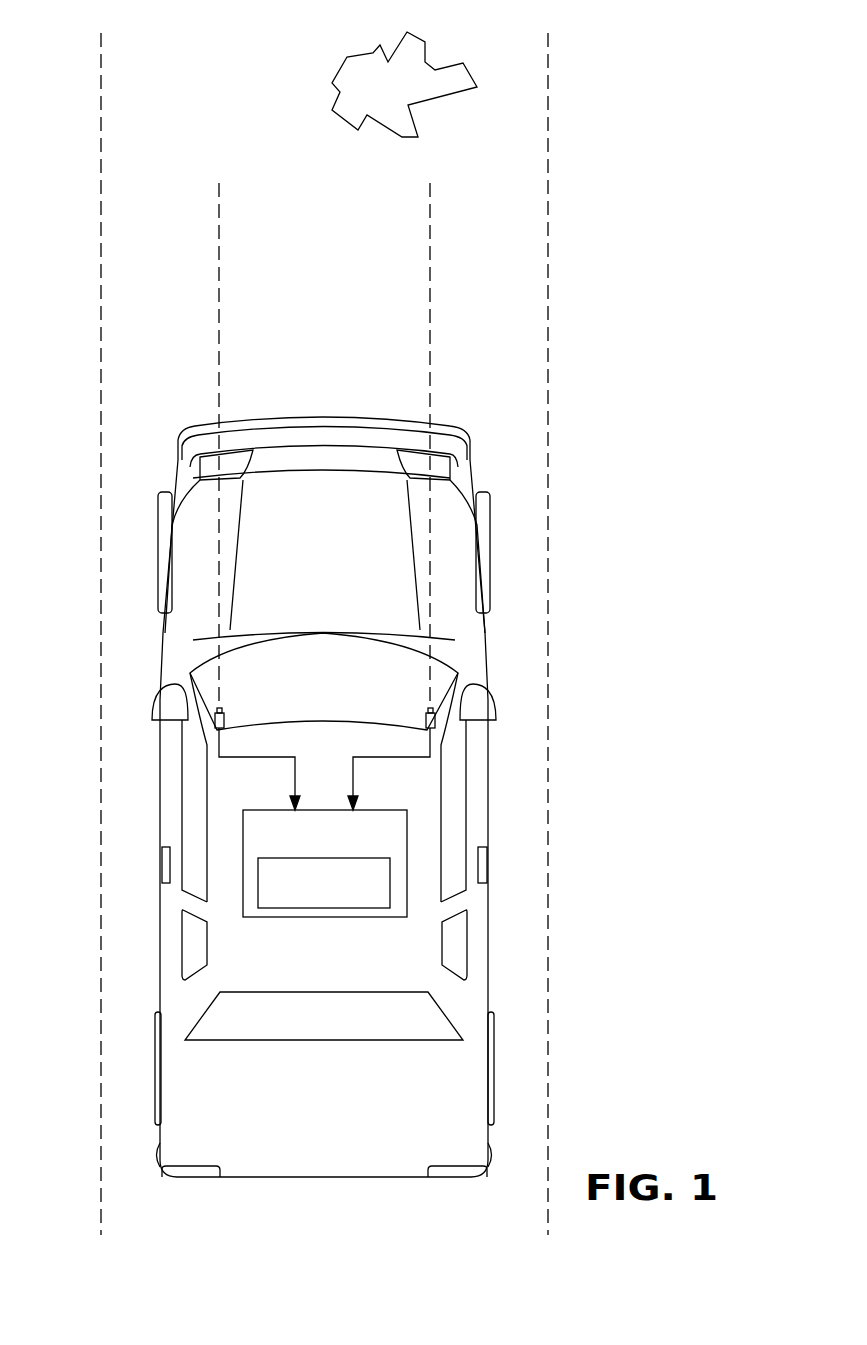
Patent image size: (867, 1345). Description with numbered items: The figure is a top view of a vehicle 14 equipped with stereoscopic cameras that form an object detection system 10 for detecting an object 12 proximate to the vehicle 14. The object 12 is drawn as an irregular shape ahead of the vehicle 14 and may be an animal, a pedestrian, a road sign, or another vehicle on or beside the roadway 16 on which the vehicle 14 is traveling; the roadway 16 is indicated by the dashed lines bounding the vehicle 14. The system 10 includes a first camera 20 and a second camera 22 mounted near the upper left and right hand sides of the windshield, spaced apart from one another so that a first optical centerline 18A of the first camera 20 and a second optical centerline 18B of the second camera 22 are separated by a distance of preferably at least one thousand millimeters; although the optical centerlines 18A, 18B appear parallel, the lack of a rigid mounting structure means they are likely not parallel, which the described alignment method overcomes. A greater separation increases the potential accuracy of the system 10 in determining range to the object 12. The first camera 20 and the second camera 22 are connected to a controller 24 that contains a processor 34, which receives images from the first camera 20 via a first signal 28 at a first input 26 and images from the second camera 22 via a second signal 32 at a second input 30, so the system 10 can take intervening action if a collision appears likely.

The object detection system 10 is at (573, 178).
The object 12 is at (465, 67).
The vehicle 14 is at (488, 998).
The roadway 16 is at (172, 1225).
The first optical centerline 18A is at (219, 347).
The second optical centerline 18B is at (430, 347).
The first camera 20 is at (214, 711).
The second camera 22 is at (436, 711).
The controller 24 is at (407, 878).
The first input 26 is at (236, 808).
The first signal 28 is at (230, 760).
The second input 30 is at (412, 808).
The second signal 32 is at (420, 760).
The processor 34 is at (243, 878).